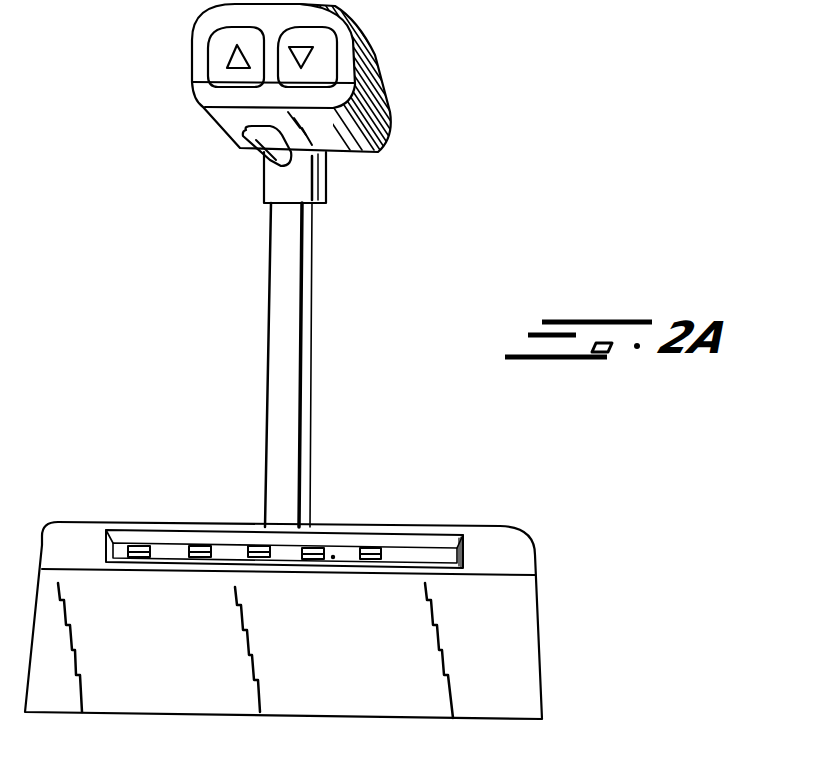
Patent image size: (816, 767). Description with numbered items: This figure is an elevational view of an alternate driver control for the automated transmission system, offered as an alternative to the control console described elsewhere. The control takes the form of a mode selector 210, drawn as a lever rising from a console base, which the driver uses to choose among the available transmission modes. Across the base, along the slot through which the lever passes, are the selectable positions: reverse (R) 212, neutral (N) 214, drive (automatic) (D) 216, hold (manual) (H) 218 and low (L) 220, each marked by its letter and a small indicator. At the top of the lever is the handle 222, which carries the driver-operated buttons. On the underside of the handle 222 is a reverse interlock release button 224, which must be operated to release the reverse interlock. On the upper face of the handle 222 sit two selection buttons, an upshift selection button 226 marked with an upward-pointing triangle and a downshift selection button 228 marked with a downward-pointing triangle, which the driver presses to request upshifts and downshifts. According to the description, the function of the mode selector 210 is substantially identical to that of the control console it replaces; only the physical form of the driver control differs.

The mode selector 210 is at (395, 94).
The reverse (R) position 212 is at (142, 558).
The neutral (N) position 214 is at (202, 558).
The drive (automatic) (D) position 216 is at (260, 558).
The hold (manual) (H) position 218 is at (313, 560).
The low (L) position 220 is at (368, 560).
The handle 222 is at (185, 66).
The reverse interlock release button 224 is at (264, 159).
The upshift selection button 226 is at (228, 40).
The downshift selection button 228 is at (304, 43).